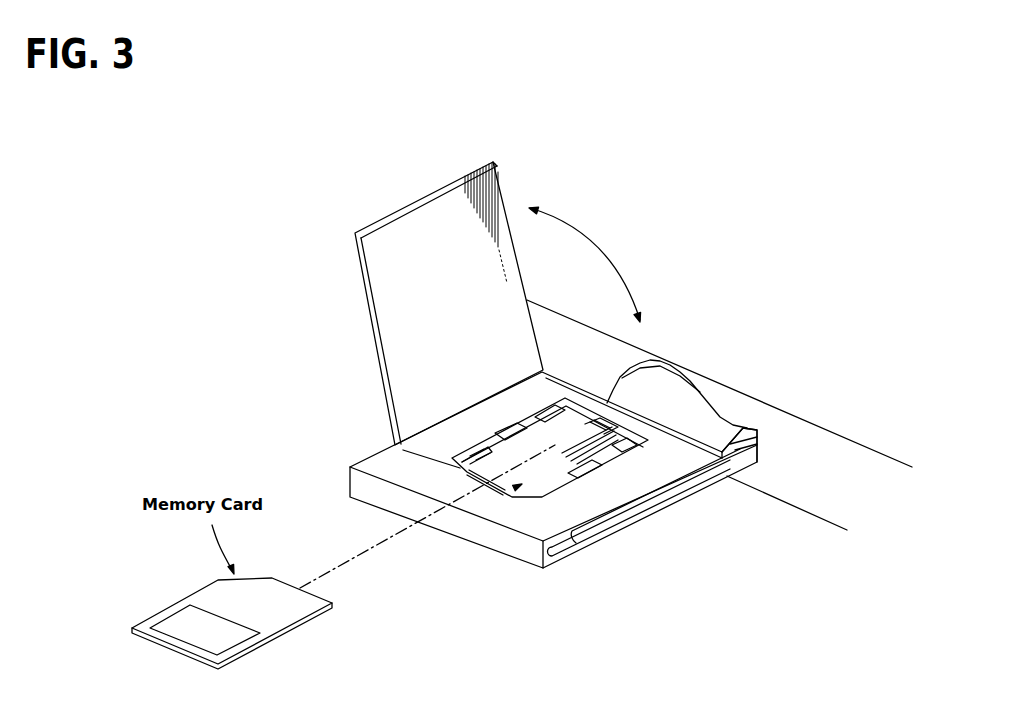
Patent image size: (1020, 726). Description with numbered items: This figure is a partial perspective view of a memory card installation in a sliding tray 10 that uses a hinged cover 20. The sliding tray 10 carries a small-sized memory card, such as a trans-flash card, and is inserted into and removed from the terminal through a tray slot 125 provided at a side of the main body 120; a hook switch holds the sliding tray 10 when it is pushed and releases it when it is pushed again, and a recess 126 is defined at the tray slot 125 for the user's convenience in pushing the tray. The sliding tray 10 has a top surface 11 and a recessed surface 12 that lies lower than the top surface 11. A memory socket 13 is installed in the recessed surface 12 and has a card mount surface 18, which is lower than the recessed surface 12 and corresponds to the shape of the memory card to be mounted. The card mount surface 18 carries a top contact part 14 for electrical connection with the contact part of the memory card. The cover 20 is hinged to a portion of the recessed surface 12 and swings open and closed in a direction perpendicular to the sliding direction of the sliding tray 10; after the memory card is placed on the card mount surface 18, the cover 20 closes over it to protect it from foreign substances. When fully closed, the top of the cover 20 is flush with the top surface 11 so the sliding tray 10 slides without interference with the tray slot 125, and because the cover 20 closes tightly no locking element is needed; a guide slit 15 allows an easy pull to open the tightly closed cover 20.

The sliding tray 10 is at (348, 433).
The top surface 11 is at (527, 528).
The recessed surface 12 is at (603, 503).
The memory socket 13 is at (525, 481).
The top contact part 14 is at (595, 425).
The guide slit 15 is at (573, 550).
The card mount surface 18 is at (468, 470).
The cover 20 is at (385, 306).
The main body 120 is at (840, 503).
The tray slot 125 is at (745, 463).
The recess 126 is at (678, 377).